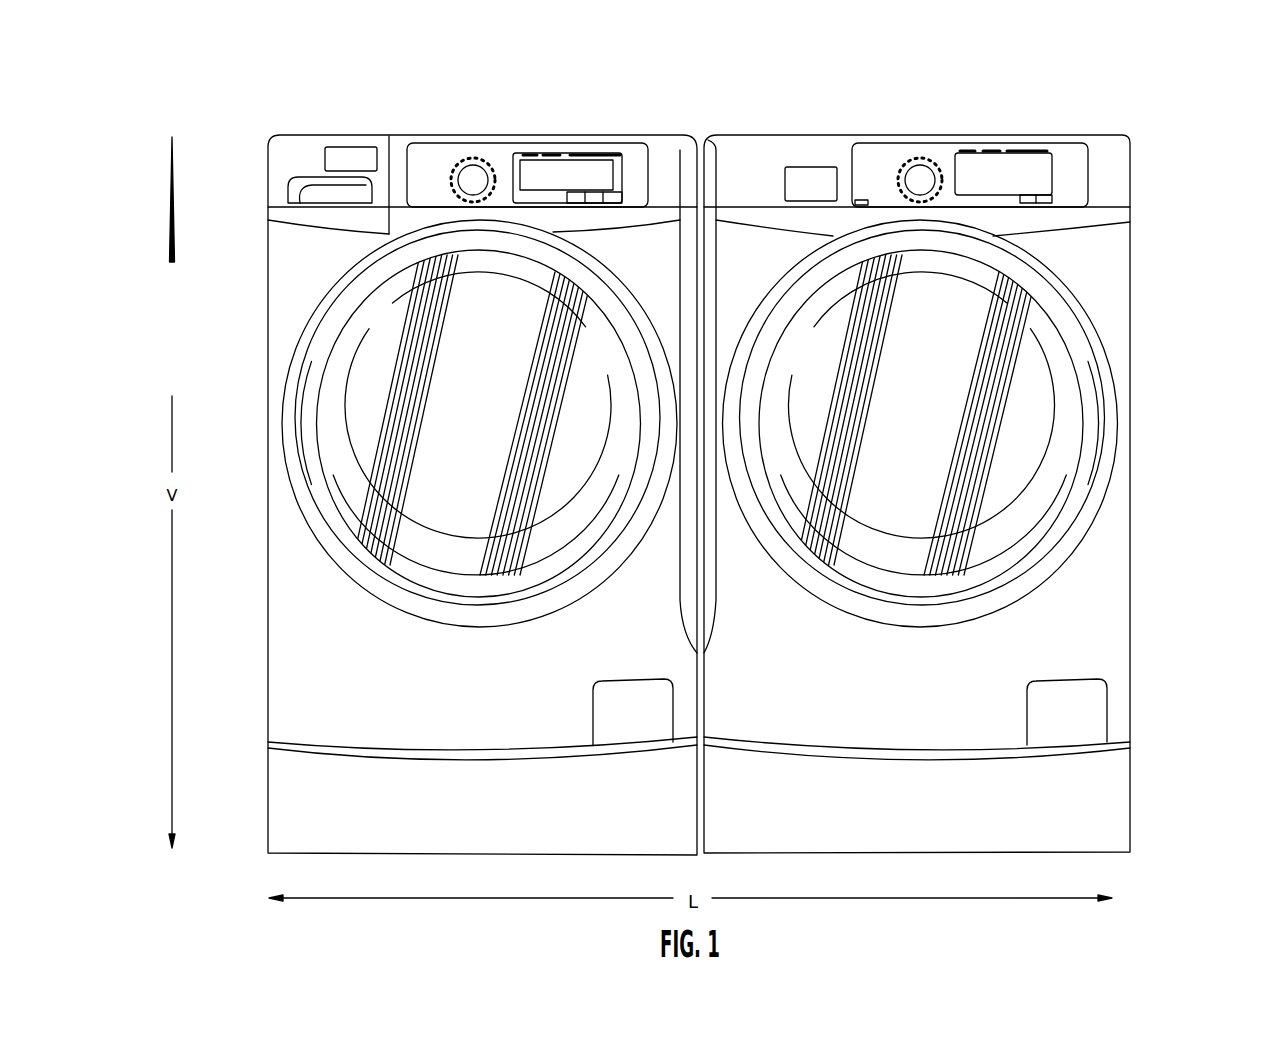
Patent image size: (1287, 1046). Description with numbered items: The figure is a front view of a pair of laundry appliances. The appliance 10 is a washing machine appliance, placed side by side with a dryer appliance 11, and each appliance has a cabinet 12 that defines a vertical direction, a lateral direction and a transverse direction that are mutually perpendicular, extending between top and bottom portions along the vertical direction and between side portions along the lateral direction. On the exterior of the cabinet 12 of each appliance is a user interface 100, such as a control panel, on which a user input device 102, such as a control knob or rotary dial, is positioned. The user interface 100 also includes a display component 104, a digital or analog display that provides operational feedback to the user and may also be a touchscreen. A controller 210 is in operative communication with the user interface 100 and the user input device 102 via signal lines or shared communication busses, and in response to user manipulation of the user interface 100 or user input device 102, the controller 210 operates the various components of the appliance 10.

The appliance 10 is at (240, 130).
The dryer appliance 11 is at (1160, 158).
The cabinet 12 is at (298, 627).
The user interface 100 is at (507, 153).
The user input device 102 is at (468, 165).
The display component 104 is at (590, 170).
The controller 210 is at (355, 146).